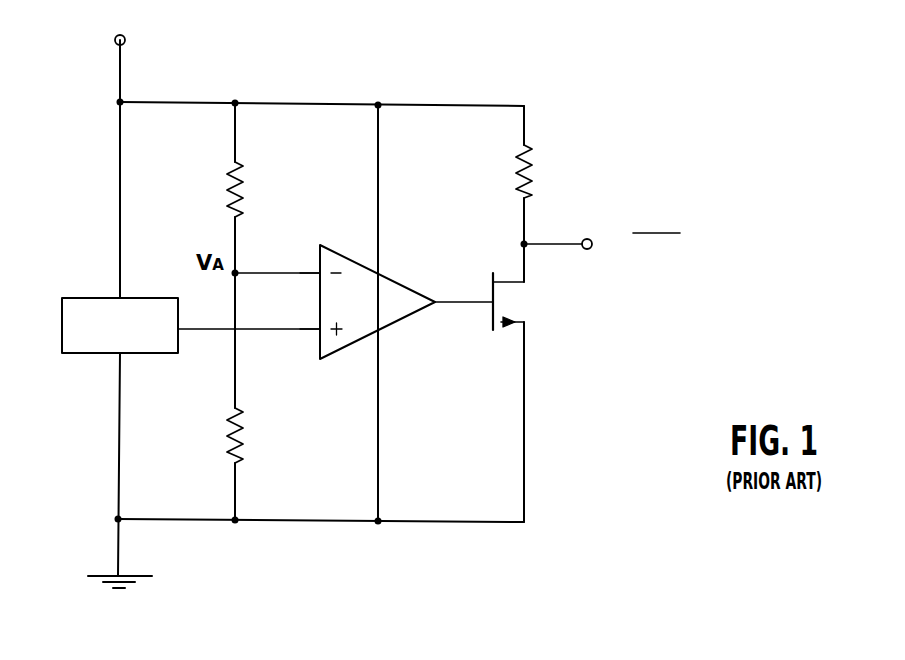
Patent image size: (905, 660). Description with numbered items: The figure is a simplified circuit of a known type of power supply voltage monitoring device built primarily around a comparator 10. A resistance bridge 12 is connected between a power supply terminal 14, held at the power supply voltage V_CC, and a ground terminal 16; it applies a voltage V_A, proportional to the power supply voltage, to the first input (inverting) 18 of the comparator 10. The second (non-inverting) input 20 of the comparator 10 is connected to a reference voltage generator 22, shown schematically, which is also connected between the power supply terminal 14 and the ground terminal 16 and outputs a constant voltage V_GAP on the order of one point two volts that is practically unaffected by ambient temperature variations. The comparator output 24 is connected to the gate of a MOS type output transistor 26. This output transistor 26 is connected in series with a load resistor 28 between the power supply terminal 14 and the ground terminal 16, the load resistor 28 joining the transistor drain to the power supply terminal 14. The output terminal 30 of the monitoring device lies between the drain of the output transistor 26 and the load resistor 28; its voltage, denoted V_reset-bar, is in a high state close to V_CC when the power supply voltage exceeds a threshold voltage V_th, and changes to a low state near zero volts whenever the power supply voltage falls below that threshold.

The comparator 10 is at (396, 290).
The resistance bridge 12 is at (262, 184).
The power supply terminal 14 is at (126, 38).
The ground terminal 16 is at (104, 574).
The first input (inverting) 18 is at (316, 272).
The second (non-inverting) input 20 is at (318, 334).
The reference voltage generator 22 is at (82, 340).
The comparator output 24 is at (460, 308).
The output transistor 26 is at (496, 298).
The load resistor 28 is at (540, 145).
The output terminal 30 is at (588, 237).